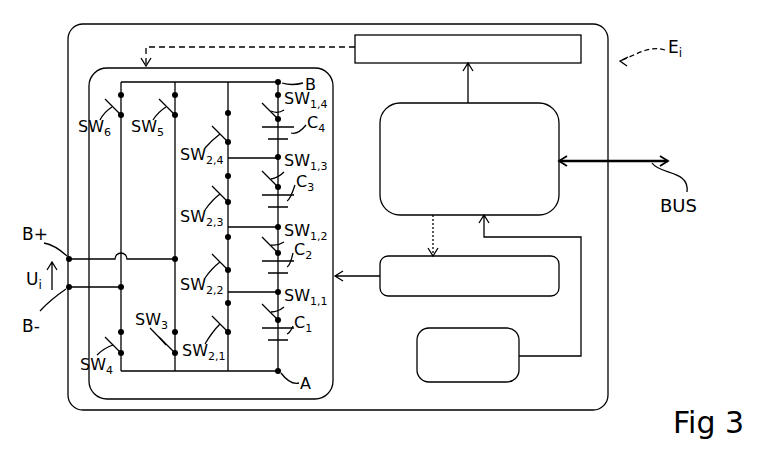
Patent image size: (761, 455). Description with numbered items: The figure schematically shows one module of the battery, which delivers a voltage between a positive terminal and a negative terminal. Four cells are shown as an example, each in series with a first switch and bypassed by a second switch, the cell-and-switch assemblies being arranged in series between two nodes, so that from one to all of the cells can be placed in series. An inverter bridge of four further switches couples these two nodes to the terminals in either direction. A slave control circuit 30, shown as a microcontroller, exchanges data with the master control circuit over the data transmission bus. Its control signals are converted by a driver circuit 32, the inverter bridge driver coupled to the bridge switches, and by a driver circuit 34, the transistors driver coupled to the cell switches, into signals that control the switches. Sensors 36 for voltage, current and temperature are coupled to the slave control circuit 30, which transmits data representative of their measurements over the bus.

The slave control circuit 30 is at (526, 103).
The driver circuit 32 is at (398, 65).
The driver circuit 34 is at (400, 297).
The sensors 36 is at (430, 383).